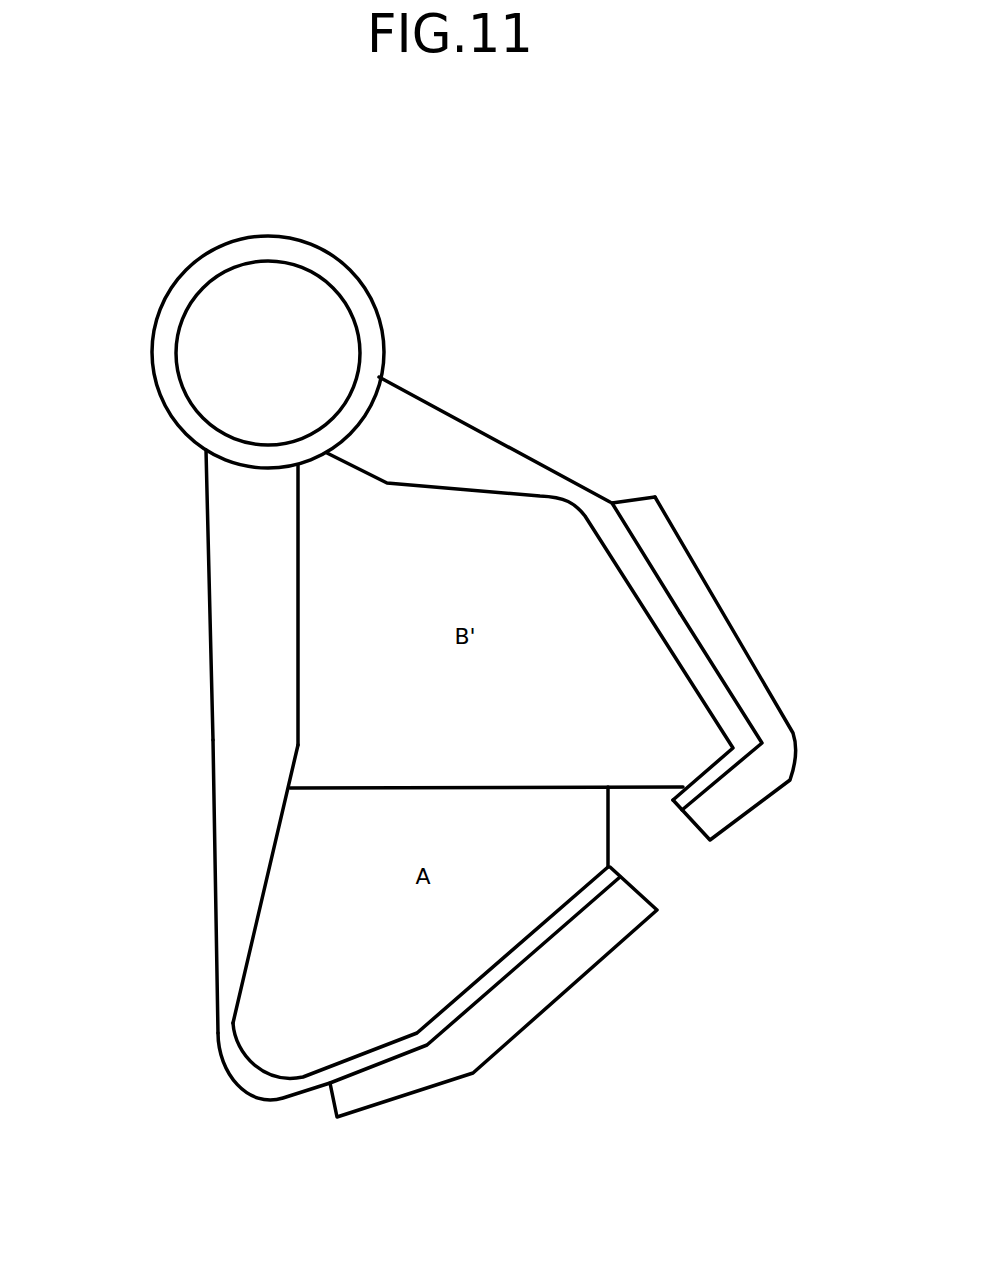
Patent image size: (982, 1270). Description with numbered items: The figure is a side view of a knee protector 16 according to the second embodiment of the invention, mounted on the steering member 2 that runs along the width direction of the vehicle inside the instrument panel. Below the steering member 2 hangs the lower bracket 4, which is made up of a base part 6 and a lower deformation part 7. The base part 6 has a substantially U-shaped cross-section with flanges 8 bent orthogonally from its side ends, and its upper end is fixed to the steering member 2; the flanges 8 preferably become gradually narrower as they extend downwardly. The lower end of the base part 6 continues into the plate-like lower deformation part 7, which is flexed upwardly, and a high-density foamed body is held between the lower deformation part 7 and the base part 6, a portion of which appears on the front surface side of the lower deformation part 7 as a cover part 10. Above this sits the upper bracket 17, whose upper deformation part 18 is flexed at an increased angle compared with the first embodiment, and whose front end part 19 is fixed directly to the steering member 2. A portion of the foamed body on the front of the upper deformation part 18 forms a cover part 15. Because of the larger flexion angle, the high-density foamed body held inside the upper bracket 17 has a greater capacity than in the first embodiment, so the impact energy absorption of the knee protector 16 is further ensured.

The steering member 2 is at (175, 284).
The lower bracket 4 is at (123, 752).
The base part 6 is at (212, 752).
The lower deformation part 7 is at (407, 1037).
The flanges 8 is at (297, 556).
The cover part 10 is at (562, 992).
The cover part 15 is at (757, 643).
The knee protector 16 is at (742, 922).
The upper bracket 17 is at (543, 332).
The upper deformation part 18 is at (627, 548).
The front end part 19 is at (483, 440).